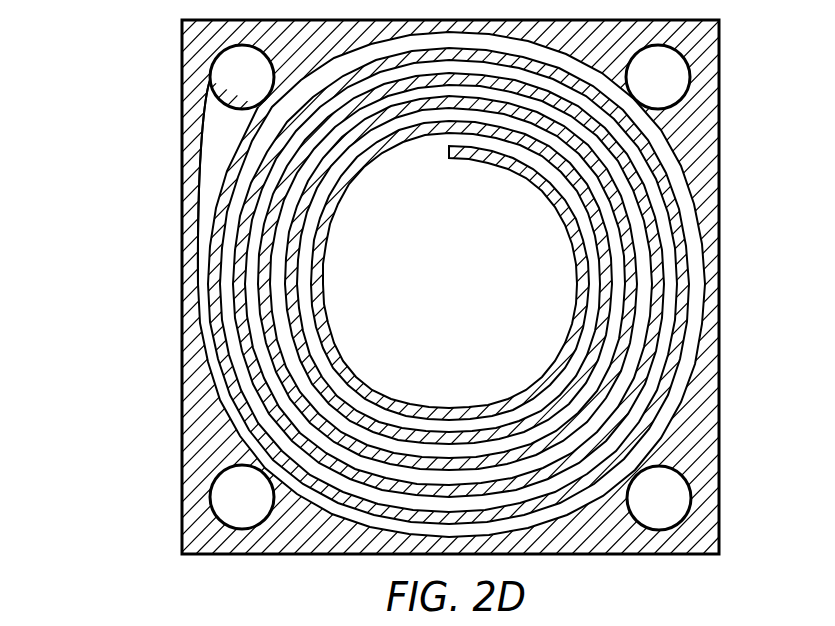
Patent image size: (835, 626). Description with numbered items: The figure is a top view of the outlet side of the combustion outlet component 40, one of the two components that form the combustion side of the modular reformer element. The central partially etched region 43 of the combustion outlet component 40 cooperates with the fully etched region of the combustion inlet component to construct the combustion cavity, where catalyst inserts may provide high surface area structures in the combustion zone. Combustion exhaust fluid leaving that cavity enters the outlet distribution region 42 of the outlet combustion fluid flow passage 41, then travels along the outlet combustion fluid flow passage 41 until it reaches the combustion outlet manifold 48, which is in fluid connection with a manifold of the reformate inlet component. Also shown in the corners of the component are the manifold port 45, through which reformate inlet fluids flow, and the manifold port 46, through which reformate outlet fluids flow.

The combustion outlet component 40 is at (110, 120).
The outlet combustion fluid flow passage 41 is at (220, 177).
The outlet distribution region 42 is at (407, 163).
The partially etched region 43 is at (408, 320).
The manifold port 45 is at (673, 83).
The manifold port 46 is at (222, 497).
The combustion outlet manifold 48 is at (227, 78).